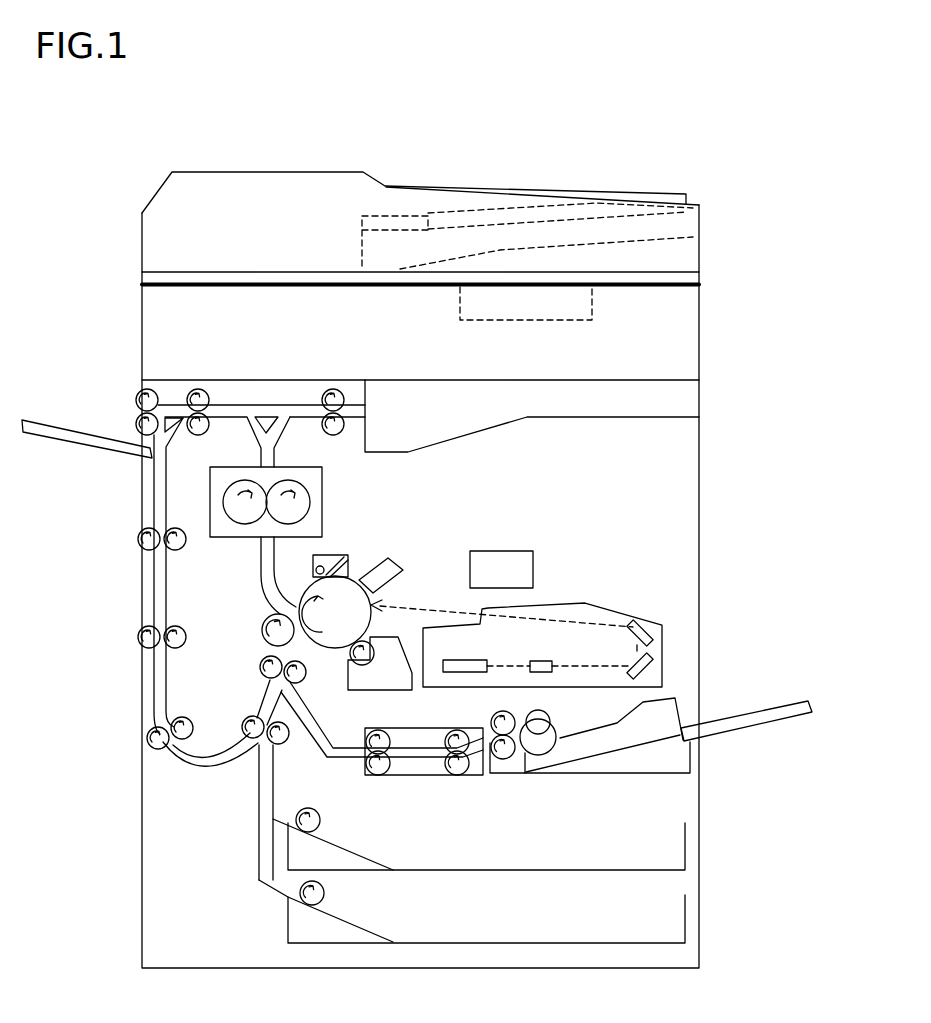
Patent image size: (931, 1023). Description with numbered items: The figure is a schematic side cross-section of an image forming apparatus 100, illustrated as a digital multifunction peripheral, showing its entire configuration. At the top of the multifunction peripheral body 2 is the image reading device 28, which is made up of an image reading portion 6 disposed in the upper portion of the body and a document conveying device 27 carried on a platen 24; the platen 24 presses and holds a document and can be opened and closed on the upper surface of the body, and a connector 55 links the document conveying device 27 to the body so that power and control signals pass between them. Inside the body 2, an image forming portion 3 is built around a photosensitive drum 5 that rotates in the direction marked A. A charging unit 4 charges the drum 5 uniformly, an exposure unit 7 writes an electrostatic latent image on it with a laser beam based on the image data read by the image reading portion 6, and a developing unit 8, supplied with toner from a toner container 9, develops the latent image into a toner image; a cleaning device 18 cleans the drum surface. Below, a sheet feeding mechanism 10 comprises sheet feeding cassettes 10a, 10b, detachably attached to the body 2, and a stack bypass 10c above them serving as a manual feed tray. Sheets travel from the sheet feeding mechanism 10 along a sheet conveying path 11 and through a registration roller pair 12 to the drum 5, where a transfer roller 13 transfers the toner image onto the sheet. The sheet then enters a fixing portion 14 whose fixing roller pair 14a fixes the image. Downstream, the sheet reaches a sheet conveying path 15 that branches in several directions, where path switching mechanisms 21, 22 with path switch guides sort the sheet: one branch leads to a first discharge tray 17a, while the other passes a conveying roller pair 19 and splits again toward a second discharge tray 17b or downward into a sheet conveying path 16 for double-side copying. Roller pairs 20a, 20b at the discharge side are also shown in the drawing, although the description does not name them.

The image forming apparatus 100 is at (626, 158).
The multifunction peripheral body 2 is at (700, 466).
The image reading device 28 is at (58, 257).
The document conveying device 27 is at (170, 228).
The image reading portion 6 is at (153, 338).
The platen 24 is at (700, 279).
The connector 55 is at (518, 321).
The first discharge tray 17a is at (532, 416).
The second discharge tray 17b is at (65, 432).
The sheet conveying path 15 is at (257, 450).
The path switching mechanism 21 is at (264, 413).
The conveying roller pair 19 is at (201, 396).
The discharge roller pair 20a is at (345, 402).
The second discharge roller pair 20b is at (135, 410).
The path switching mechanism 22 is at (147, 434).
The sheet conveying path for double-side copying 16 is at (160, 578).
The fixing portion 14 is at (208, 498).
The fixing roller pair 14a is at (303, 498).
The image forming portion 3 is at (396, 533).
The photosensitive drum 5 is at (323, 637).
The charging unit 4 is at (393, 574).
The cleaning device 18 is at (330, 560).
The developing unit 8 is at (378, 677).
The transfer roller 13 is at (263, 632).
The registration roller pair 12 is at (266, 673).
The sheet conveying path 11 is at (263, 768).
The toner container 9 is at (503, 560).
The exposure unit 7 is at (567, 610).
The sheet feeding mechanism 10 is at (729, 795).
The sheet feeding cassette 10a is at (670, 852).
The sheet feeding cassette 10b is at (675, 925).
The stack bypass 10c is at (723, 706).